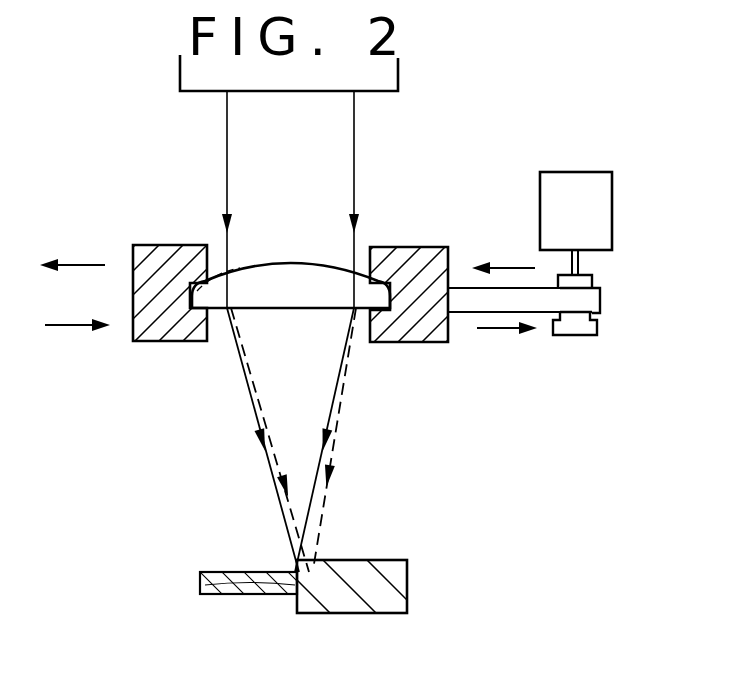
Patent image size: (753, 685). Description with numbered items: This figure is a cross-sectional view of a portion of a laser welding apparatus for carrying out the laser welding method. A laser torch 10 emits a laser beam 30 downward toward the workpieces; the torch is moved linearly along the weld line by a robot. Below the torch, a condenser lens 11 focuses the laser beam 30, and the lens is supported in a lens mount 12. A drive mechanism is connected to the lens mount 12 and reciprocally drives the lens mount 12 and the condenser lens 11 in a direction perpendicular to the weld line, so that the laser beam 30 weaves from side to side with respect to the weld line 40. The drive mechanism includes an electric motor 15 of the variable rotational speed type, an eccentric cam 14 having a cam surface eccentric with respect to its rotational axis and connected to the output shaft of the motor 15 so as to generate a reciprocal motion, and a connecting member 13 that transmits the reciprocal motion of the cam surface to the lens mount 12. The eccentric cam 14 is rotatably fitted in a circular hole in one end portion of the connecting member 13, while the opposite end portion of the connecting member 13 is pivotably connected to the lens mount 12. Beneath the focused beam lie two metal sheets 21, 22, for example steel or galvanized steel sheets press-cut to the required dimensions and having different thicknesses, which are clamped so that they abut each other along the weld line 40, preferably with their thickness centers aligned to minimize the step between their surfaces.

The laser torch 10 is at (398, 66).
The laser beam 30 is at (357, 144).
The condenser lens 11 is at (206, 290).
The lens mount 12 is at (165, 318).
The connecting member 13 is at (470, 302).
The eccentric cam 14 is at (575, 323).
The electric motor 15 is at (553, 228).
The metal sheet 21 is at (408, 581).
The metal sheet 22 is at (213, 573).
The weld line 40 is at (222, 587).